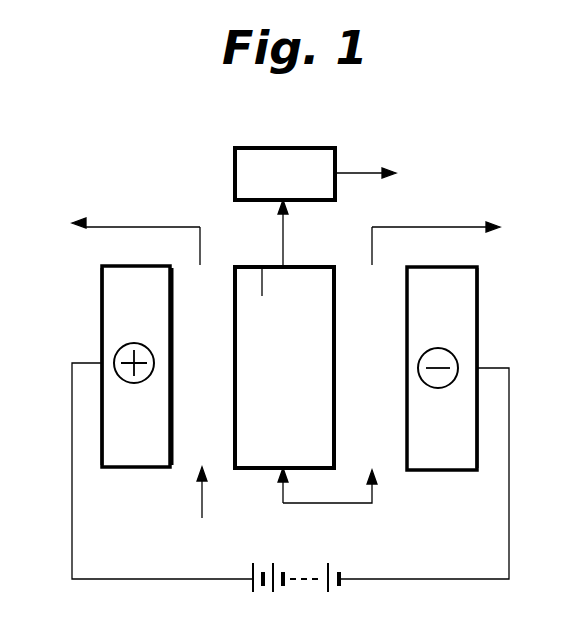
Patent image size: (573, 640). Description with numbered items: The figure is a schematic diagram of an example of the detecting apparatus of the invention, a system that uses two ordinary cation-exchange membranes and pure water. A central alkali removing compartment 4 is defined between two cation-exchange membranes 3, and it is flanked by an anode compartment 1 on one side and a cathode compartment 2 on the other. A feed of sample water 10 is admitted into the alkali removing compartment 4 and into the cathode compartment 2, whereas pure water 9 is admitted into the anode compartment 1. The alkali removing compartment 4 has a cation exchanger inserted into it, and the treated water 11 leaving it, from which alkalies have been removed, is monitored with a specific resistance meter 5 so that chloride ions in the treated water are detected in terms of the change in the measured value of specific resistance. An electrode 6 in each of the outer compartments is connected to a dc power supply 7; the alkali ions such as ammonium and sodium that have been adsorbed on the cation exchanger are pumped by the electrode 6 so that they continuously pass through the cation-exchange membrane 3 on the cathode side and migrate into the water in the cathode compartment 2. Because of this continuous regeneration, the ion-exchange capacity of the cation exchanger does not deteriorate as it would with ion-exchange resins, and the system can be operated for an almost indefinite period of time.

The anode compartment 1 is at (185, 437).
The cathode compartment 2 is at (378, 438).
The cation-exchange membranes 3 is at (235, 282).
The alkali removing compartment 4 is at (262, 276).
The specific resistance meter 5 is at (235, 160).
The electrode 6 is at (102, 297).
The dc power supply 7 is at (281, 570).
The pure water 9 is at (198, 503).
The sample water 10 is at (283, 508).
The treated water 11 is at (352, 172).